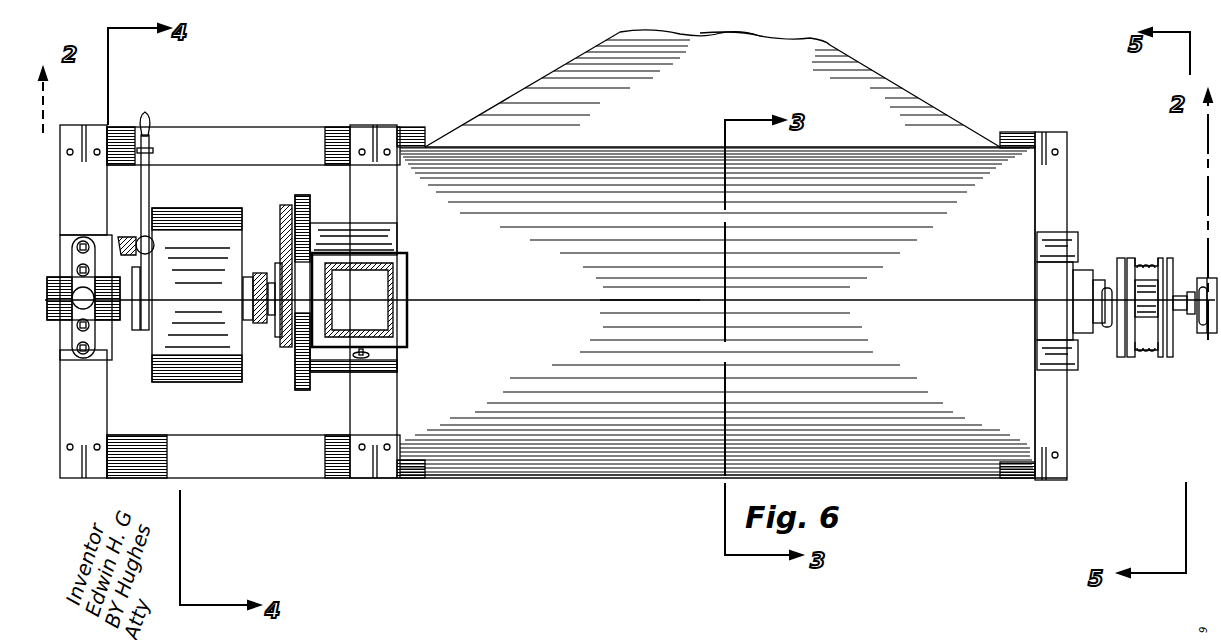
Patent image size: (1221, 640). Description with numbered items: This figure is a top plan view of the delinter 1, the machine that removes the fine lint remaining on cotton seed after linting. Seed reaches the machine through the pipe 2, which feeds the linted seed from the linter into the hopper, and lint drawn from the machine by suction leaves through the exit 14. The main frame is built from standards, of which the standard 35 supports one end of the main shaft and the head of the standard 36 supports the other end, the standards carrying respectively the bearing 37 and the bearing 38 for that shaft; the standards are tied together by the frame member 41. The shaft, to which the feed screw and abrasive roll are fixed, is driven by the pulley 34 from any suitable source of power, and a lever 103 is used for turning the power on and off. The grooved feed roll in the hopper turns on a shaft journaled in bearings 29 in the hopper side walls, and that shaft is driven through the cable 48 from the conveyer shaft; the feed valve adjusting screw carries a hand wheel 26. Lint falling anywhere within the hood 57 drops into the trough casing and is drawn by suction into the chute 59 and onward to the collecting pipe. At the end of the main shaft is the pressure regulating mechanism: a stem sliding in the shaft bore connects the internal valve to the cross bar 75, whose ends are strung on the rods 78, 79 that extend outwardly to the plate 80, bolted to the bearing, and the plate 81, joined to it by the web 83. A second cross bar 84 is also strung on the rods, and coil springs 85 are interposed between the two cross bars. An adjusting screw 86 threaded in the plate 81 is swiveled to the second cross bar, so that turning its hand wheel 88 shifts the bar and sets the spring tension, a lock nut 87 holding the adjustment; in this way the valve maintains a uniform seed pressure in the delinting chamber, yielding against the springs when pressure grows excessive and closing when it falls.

The delinter 1 is at (717, 311).
The pipe 2 is at (325, 320).
The exit 14 is at (764, 42).
The hand wheel 26 is at (398, 366).
The bearings 29 is at (308, 262).
The pulley 34 is at (198, 385).
The standard 35 is at (83, 301).
The standard 36 is at (1051, 306).
The bearing 37 is at (55, 330).
The bearing 38 is at (1085, 340).
The frame member 41 is at (1030, 110).
The cable 48 is at (284, 352).
The hood 57 is at (606, 318).
The chute 59 is at (712, 88).
The cross bar 75 is at (1128, 260).
The rod 78 is at (1138, 262).
The rod 79 is at (1140, 357).
The plate 80 is at (1128, 357).
The plate 81 is at (1165, 357).
The web 83 is at (1146, 298).
The second cross bar 84 is at (1155, 357).
The coil springs 85 is at (1152, 262).
The adjusting screw 86 is at (1192, 292).
The lock nut 87 is at (1212, 335).
The hand wheel 88 is at (1190, 333).
The lever 103 is at (152, 118).